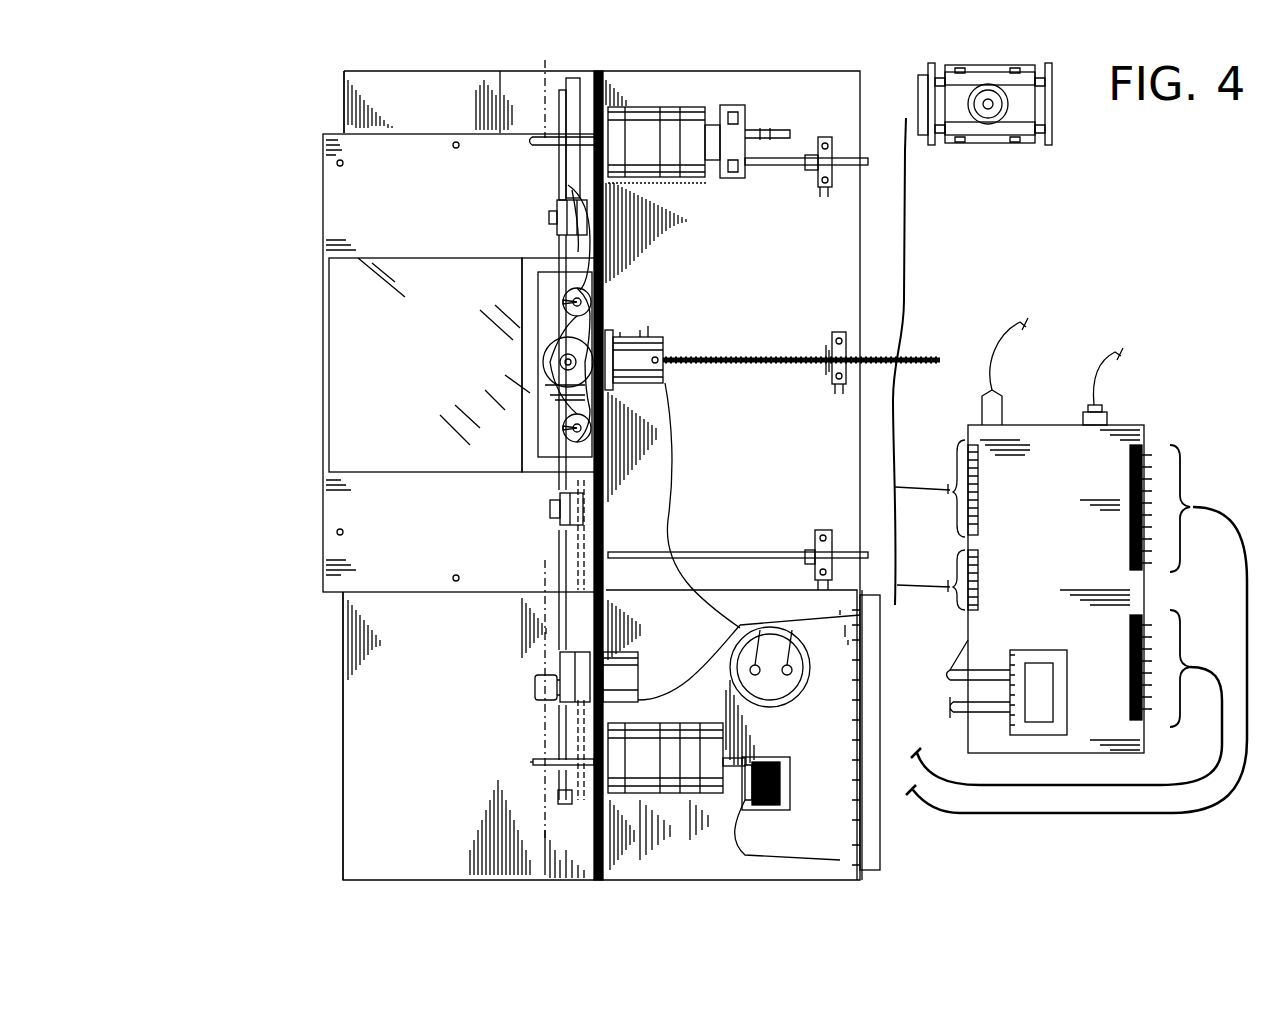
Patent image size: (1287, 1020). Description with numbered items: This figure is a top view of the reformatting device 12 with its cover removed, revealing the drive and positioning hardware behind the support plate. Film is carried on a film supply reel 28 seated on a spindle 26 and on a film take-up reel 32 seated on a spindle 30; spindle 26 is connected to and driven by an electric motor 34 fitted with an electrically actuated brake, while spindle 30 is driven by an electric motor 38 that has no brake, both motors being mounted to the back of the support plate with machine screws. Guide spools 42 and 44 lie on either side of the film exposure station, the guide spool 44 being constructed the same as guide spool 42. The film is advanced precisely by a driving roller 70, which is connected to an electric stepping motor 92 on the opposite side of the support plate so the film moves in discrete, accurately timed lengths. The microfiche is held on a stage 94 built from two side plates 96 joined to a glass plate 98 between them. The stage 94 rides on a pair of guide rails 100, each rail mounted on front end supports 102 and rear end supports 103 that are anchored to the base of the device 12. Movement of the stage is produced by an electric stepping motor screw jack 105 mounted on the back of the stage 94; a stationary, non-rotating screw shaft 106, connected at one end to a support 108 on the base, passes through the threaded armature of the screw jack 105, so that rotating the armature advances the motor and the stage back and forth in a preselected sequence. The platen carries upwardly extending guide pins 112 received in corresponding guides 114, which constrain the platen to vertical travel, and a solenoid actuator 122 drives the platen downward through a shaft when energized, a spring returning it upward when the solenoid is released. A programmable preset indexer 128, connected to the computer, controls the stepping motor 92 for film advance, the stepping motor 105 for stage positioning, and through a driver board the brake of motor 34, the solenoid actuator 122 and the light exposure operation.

The reformatting device 12 is at (295, 140).
The spindle 26 is at (556, 125).
The film supply reel 28 is at (544, 80).
The spindle 30 is at (545, 755).
The film take-up reel 32 is at (556, 800).
The electric motor 34 is at (695, 107).
The electric motor 38 is at (705, 800).
The guide spool 42 is at (555, 208).
The guide spool 44 is at (555, 520).
The driving roller 70 is at (562, 668).
The electric stepping motor 92 is at (615, 652).
The stage 94 is at (493, 585).
The side plates 96 is at (418, 135).
The glass plate 98 is at (328, 312).
The guide rails 100 is at (806, 165).
The front end supports 102 is at (822, 137).
The rear end supports 103 is at (820, 530).
The electric stepping motor screw jack 105 is at (660, 390).
The screw shaft 106 is at (752, 355).
The support 108 is at (838, 335).
The guide pins 112 is at (560, 270).
The guides 114 is at (562, 300).
The solenoid actuator 122 is at (545, 365).
The programmable preset indexer 128 is at (1048, 440).